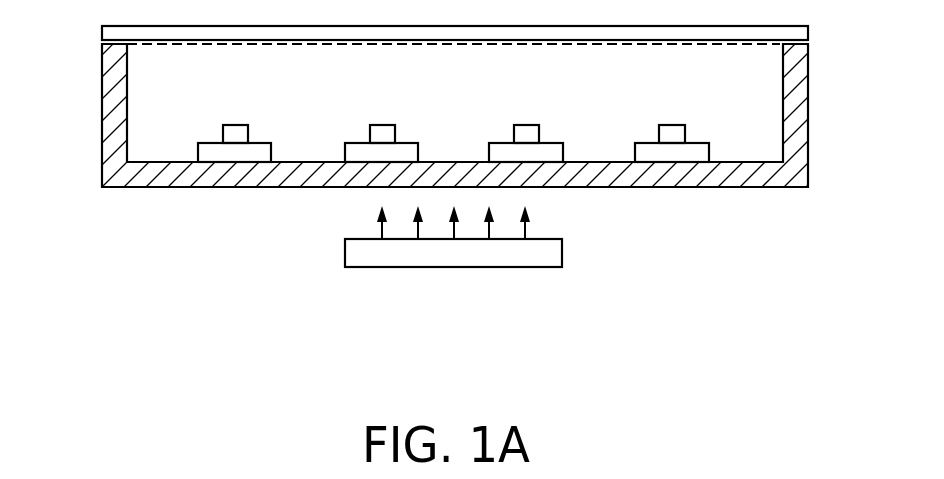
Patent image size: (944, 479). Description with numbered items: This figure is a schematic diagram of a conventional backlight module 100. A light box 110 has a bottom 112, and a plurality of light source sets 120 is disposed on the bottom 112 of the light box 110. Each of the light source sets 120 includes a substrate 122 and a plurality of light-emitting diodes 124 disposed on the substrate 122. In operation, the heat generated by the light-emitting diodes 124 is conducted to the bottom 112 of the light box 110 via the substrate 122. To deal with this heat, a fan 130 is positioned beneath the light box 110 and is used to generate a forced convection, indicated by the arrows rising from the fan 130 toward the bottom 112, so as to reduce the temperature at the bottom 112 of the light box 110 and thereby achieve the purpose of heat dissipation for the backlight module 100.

The backlight module 100 is at (807, 264).
The light box 110 is at (795, 118).
The bottom 112 is at (163, 163).
The light source sets 120 is at (293, 267).
The substrate 122 is at (210, 153).
The light-emitting diodes 124 is at (237, 137).
The fan 130 is at (455, 250).